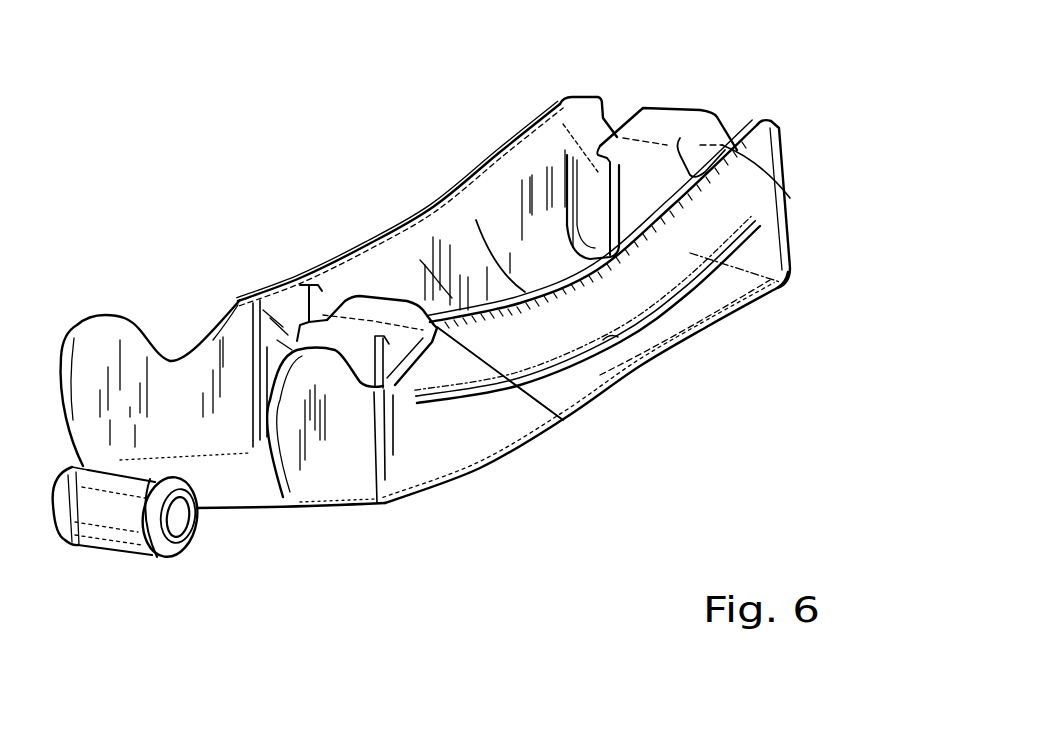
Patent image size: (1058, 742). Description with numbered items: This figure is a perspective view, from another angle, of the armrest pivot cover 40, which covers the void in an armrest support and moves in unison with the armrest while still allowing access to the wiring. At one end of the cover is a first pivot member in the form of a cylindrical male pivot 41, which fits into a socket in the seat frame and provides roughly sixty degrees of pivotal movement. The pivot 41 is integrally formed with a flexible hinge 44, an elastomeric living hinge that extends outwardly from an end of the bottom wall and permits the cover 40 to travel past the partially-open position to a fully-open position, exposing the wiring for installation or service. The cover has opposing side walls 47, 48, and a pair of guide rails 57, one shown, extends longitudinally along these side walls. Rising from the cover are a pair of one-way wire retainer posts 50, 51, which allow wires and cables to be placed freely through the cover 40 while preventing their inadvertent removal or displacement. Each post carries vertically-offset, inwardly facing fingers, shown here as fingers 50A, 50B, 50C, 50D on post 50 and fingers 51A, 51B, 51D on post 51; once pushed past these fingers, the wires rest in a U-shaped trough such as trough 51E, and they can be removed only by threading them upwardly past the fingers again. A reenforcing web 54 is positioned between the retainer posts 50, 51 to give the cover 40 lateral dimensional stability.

The armrest pivot cover 40 is at (557, 473).
The cylindrical male pivot 41 is at (103, 515).
The flexible hinge 44 is at (220, 490).
The side wall 47 is at (485, 205).
The side wall 48 is at (697, 310).
The one-way wire retainer post 50 is at (340, 303).
The inwardly facing finger 50A is at (225, 341).
The inwardly facing finger 50B is at (290, 322).
The inwardly facing finger 50C is at (377, 503).
The inwardly facing finger 50D is at (560, 422).
The one-way wire retainer post 51 is at (668, 112).
The inwardly facing finger 51A is at (593, 167).
The inwardly facing finger 51B is at (600, 170).
The inwardly facing finger 51D is at (795, 199).
The U-shaped trough 51E is at (782, 283).
The reenforcing web 54 is at (440, 221).
The guide rail 57 is at (620, 347).